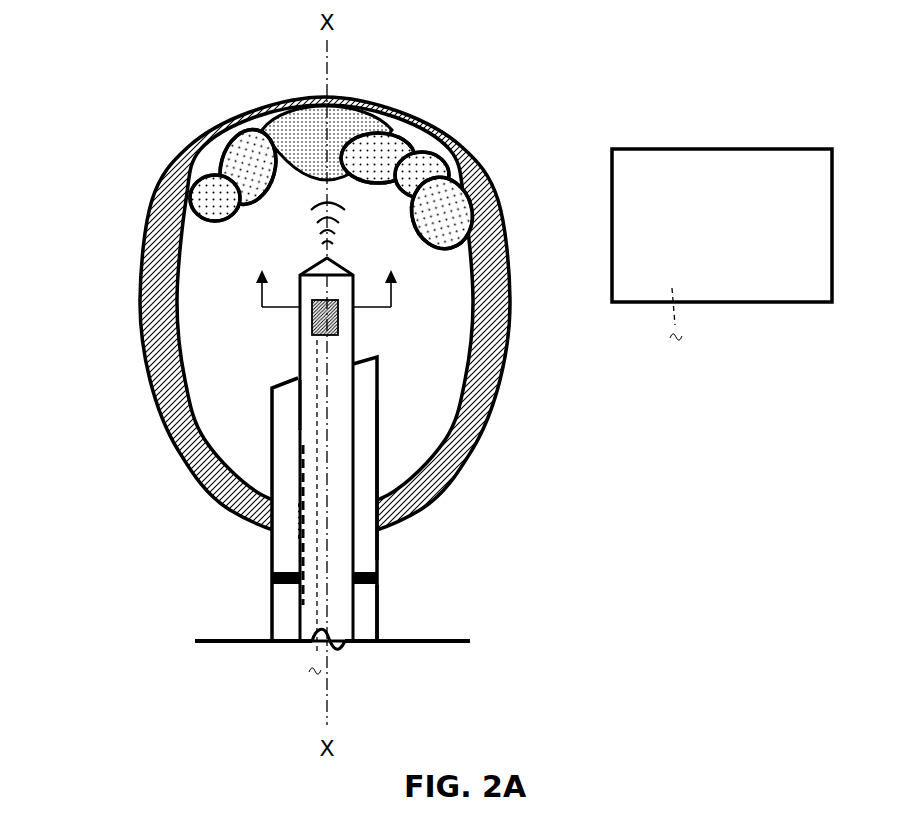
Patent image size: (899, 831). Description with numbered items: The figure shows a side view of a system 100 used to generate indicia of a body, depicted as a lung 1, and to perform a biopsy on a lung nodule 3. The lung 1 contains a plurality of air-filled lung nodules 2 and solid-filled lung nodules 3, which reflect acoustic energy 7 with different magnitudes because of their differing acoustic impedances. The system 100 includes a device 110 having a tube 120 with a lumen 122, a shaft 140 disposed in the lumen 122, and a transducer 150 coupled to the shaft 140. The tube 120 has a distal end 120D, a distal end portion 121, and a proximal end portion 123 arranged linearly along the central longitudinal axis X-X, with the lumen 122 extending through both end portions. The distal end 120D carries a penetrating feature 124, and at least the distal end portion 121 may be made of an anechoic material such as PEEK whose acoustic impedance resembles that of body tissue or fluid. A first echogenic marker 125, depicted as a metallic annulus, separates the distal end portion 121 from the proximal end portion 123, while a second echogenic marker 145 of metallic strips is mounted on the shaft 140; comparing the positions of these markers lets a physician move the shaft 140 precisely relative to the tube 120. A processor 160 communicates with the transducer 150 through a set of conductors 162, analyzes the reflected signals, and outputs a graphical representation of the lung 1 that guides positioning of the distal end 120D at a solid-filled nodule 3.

The system 100 is at (152, 78).
The lung 1 is at (165, 262).
The air-filled lung nodules 2 is at (382, 156).
The solid-filled lung nodule 3 is at (342, 128).
The acoustic energy 7 is at (338, 213).
The device 110 is at (399, 491).
The tube 120 is at (271, 535).
The distal end 120D is at (380, 357).
The distal end portion 121 is at (366, 537).
The lumen 122 is at (214, 484).
The proximal end portion 123 is at (366, 593).
The penetrating feature 124 is at (283, 382).
The first echogenic marker 125 is at (372, 577).
The shaft 140 is at (298, 405).
The second echogenic marker 145 is at (302, 528).
The transducer 150 is at (310, 322).
The processor 160 is at (722, 225).
The conductors 162 is at (315, 655).